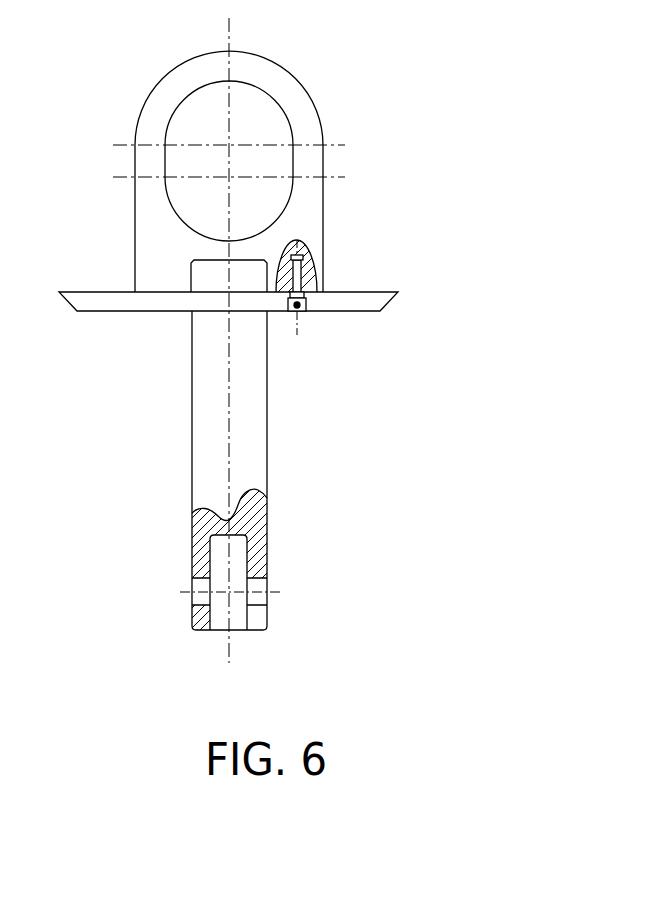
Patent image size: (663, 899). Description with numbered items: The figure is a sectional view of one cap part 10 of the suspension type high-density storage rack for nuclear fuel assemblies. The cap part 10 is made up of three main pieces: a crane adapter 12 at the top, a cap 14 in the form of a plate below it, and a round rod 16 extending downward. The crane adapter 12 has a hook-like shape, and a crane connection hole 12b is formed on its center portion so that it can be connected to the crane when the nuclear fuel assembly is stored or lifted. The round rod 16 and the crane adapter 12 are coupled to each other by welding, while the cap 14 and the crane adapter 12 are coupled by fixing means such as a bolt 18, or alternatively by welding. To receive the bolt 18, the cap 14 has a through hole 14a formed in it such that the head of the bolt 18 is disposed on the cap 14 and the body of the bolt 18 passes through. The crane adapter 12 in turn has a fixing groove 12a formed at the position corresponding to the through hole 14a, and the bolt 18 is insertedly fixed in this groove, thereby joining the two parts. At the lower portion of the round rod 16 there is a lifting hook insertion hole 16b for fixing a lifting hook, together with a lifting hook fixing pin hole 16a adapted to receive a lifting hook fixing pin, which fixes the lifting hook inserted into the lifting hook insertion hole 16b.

The cap part 10 is at (494, 525).
The crane adapter 12 is at (313, 103).
The fixing groove 12a is at (310, 272).
The crane connection hole 12b is at (190, 110).
The cap 14 is at (372, 300).
The through hole 14a is at (305, 312).
The round rod 16 is at (192, 431).
The lifting hook fixing pin hole 16a is at (260, 584).
The lifting hook insertion hole 16b is at (220, 614).
The bolt 18 is at (305, 312).